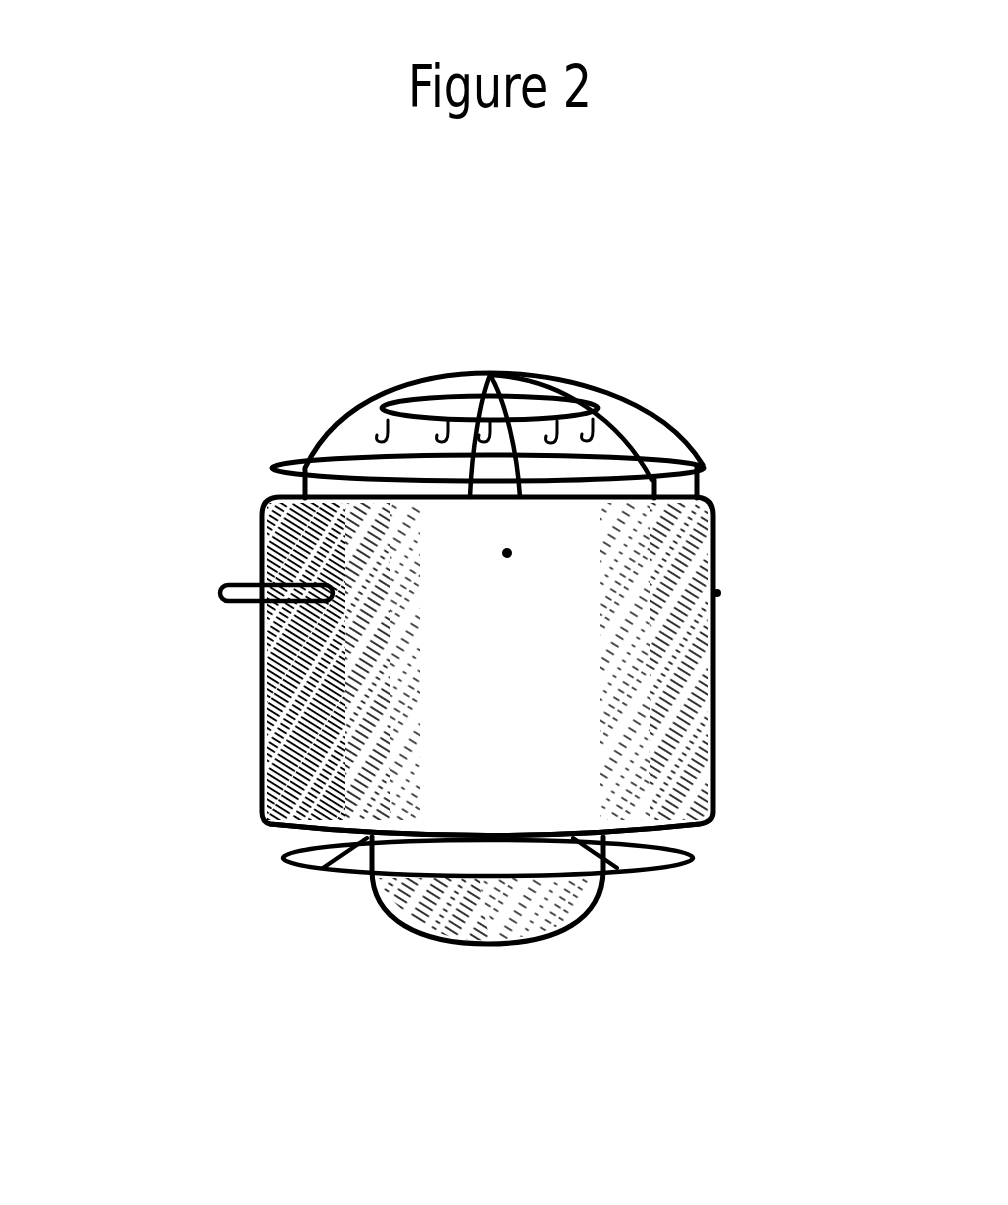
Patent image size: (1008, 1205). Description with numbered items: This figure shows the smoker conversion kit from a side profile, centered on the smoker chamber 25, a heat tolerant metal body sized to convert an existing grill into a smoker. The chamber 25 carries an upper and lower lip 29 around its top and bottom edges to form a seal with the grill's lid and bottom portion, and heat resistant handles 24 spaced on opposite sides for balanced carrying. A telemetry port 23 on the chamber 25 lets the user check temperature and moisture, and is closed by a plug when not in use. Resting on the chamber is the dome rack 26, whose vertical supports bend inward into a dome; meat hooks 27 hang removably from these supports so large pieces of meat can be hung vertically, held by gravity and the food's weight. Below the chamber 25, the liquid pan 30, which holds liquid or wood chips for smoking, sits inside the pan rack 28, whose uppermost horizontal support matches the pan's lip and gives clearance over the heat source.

The telemetry port 23 is at (507, 553).
The heat resistant handle 24 is at (218, 591).
The smoker chamber 25 is at (587, 697).
The dome rack 26 is at (652, 415).
The meat hooks 27 is at (592, 420).
The pan rack 28 is at (300, 867).
The lip 29 is at (267, 826).
The liquid pan 30 is at (380, 912).